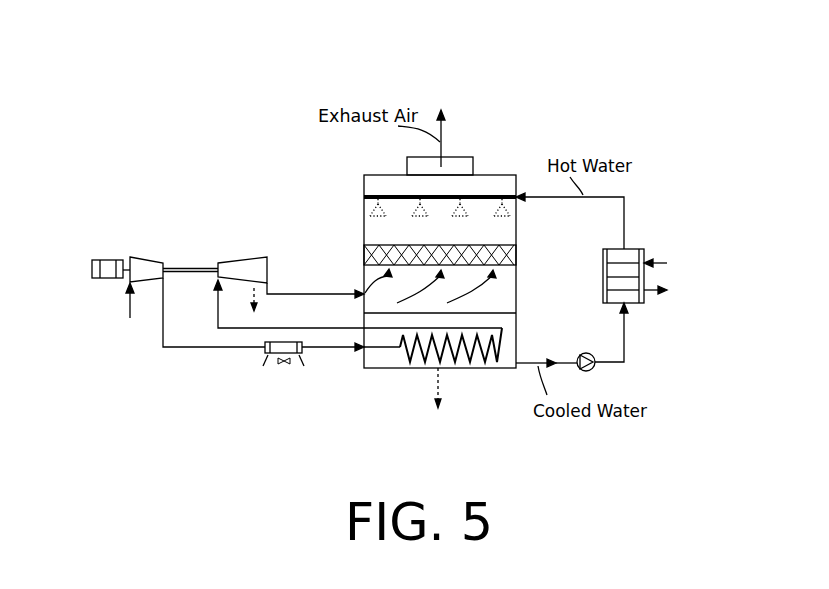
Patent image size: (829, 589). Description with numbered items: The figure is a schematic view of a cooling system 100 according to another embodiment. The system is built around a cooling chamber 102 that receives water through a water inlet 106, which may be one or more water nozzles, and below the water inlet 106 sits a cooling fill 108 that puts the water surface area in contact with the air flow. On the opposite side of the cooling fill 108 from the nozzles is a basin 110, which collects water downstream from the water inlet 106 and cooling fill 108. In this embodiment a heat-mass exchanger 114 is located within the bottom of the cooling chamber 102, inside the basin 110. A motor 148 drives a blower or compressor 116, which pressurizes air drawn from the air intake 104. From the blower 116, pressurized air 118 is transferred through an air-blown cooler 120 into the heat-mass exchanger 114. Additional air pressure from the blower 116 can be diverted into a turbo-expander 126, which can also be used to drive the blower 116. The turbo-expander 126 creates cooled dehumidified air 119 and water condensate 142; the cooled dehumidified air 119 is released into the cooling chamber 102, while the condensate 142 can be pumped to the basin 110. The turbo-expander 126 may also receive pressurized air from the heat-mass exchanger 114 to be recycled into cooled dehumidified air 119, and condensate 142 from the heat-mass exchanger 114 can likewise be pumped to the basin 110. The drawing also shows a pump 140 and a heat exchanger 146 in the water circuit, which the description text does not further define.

The cooling system 100 is at (430, 63).
The cooling chamber 102 is at (364, 230).
The air intake 104 is at (128, 305).
The water inlet 106 is at (364, 199).
The cooling fill 108 is at (503, 258).
The basin 110 is at (390, 366).
The heat-mass exchanger 114 is at (498, 352).
The blower or compressor 116 is at (140, 256).
The pressurized air 118 is at (162, 327).
The cooled dehumidified air 119 is at (323, 293).
The air-blown cooler 120 is at (265, 354).
The turbo-expander 126 is at (238, 258).
The pump 140 is at (592, 371).
The water condensate 142 is at (253, 292).
The heat exchanger 146 is at (637, 247).
The motor 148 is at (92, 262).